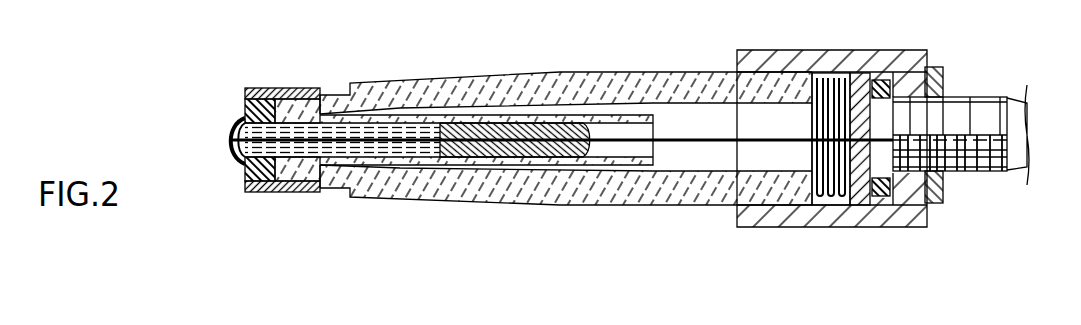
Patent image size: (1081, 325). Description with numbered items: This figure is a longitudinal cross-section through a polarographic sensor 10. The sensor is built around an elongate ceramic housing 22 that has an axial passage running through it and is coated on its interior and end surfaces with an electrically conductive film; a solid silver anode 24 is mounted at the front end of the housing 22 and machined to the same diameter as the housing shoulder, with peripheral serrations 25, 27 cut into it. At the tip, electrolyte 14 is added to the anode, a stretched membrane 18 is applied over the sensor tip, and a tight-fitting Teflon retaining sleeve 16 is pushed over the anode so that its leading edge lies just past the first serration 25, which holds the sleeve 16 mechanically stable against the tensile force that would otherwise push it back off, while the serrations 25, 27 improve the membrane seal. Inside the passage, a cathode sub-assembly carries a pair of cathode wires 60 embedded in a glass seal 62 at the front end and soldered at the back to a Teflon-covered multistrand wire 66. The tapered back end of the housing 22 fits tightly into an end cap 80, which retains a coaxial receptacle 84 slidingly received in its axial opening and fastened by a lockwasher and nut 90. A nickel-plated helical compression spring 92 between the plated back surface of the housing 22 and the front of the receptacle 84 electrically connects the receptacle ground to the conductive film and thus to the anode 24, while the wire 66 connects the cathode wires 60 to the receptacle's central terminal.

The polarographic sensor 10 is at (517, 228).
The electrolyte 14 is at (236, 124).
The retaining sleeve 16 is at (292, 89).
The membrane 18 is at (243, 114).
The ceramic housing 22 is at (416, 90).
The solid silver anode 24 is at (250, 172).
The first peripheral serration 25 is at (266, 194).
The peripheral serration 27 is at (281, 193).
The cathode wires 60 is at (229, 158).
The glass seal 62 is at (336, 190).
The Teflon-covered multistrand wire 66 is at (716, 138).
The end cap 80 is at (830, 62).
The coaxial receptacle 84 is at (975, 120).
The lockwasher and nut 90 is at (944, 95).
The helical compression spring 92 is at (838, 227).